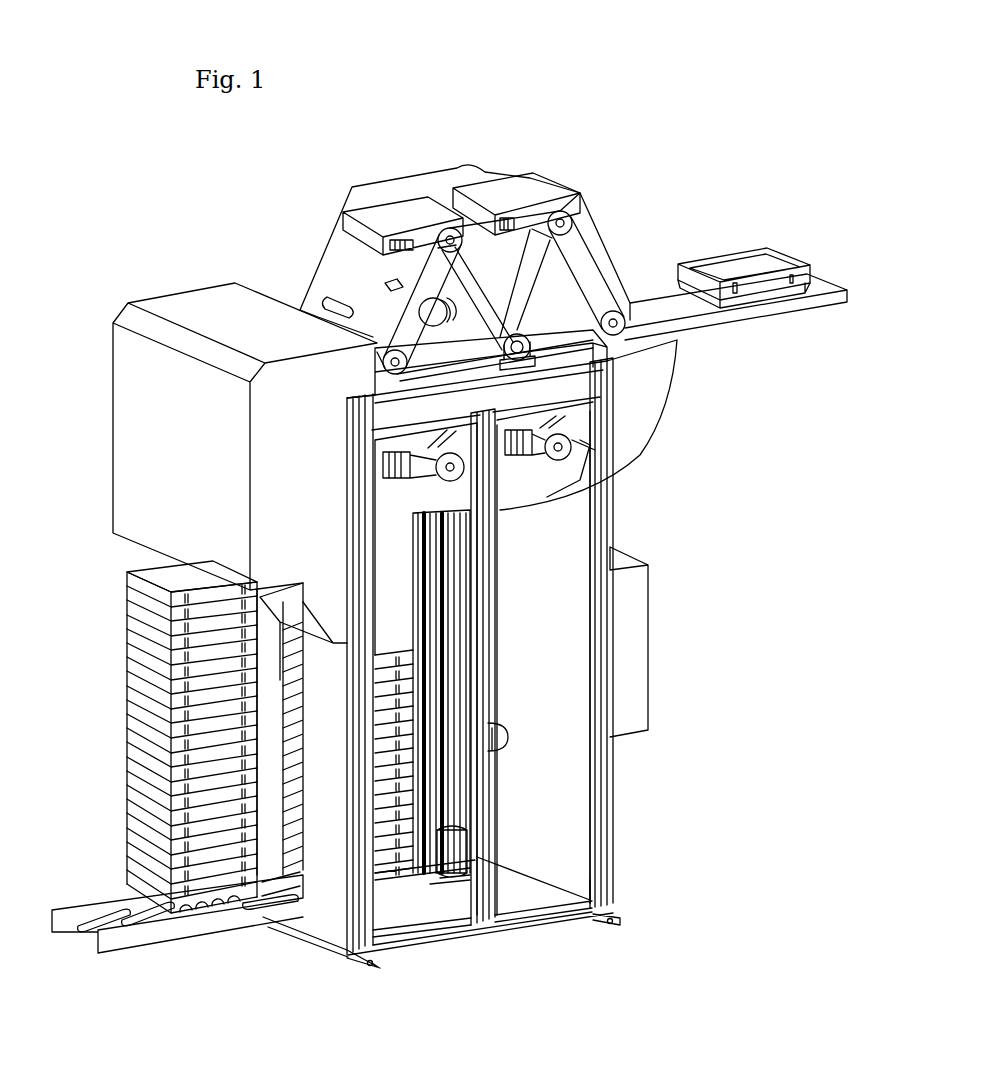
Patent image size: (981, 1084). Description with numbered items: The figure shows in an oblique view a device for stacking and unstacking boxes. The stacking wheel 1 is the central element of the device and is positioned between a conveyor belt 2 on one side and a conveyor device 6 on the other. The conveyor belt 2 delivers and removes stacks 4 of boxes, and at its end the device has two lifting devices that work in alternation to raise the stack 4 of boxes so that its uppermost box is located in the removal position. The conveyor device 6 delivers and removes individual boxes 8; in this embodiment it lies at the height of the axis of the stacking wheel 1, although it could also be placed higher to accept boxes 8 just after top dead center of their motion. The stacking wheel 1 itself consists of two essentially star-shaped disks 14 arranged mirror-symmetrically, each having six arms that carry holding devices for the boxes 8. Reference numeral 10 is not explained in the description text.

The stacking wheel 1 is at (486, 262).
The conveyor belt 2 is at (165, 935).
The stack of boxes 4 is at (130, 753).
The conveyor device 6 is at (717, 320).
The box 8 is at (732, 263).
The guide roller 10 is at (423, 455).
The star-shaped disk 14 is at (405, 268).